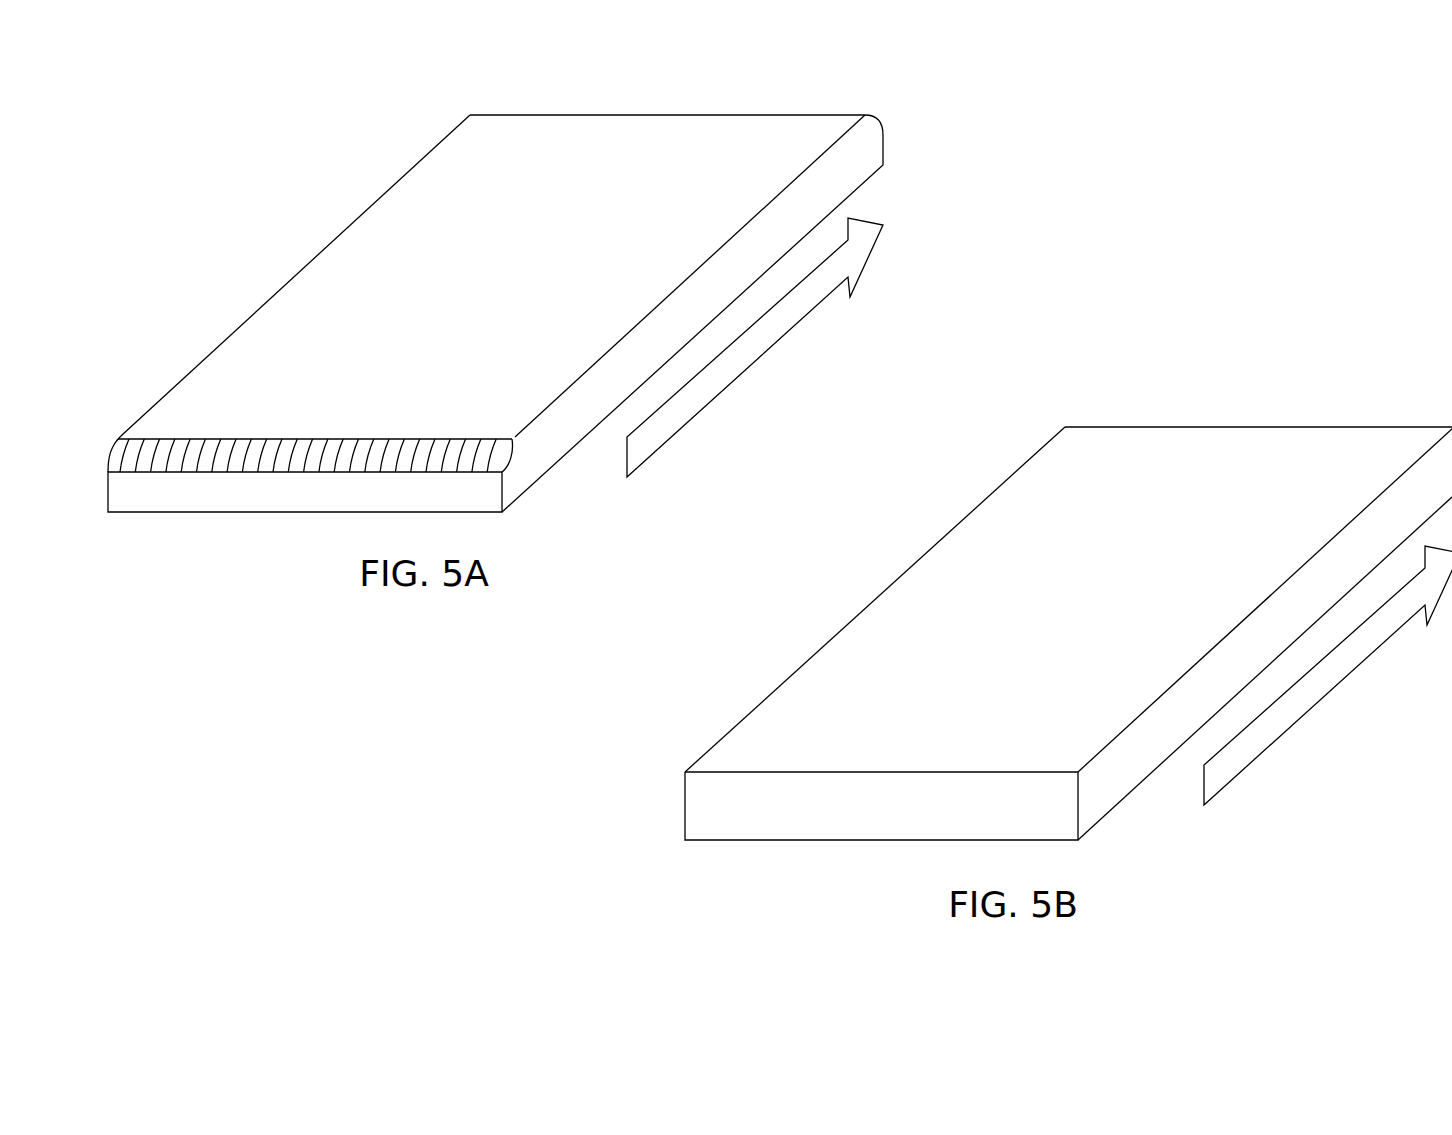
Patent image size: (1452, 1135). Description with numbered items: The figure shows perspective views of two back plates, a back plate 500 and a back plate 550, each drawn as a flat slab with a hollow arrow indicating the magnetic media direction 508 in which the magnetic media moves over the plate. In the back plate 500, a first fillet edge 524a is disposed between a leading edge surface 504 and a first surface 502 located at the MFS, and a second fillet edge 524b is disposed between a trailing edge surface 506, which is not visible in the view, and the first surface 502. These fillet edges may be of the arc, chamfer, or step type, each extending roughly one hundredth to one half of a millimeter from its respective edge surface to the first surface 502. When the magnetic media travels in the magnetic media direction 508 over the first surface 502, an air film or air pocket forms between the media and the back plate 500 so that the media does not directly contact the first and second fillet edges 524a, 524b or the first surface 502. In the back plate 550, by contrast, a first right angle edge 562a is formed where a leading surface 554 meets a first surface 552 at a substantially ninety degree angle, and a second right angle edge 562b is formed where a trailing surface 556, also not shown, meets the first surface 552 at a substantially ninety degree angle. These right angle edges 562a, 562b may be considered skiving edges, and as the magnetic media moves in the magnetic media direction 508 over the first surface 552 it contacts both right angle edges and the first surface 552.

In FIG. 5A, the back plate 500 is at (495, 282).
In FIG. 5A, the first surface 502 is at (488, 272).
In FIG. 5A, the leading edge surface 504 is at (313, 501).
In FIG. 5A, the trailing edge surface 506 is at (676, 100).
In FIG. 5A, the magnetic media direction 508 is at (715, 382).
In FIG. 5B, the magnetic media direction 508 is at (1292, 710).
In FIG. 5A, the first fillet edge 524a is at (243, 445).
In FIG. 5A, the second fillet edge 524b is at (607, 117).
In FIG. 5B, the back plate 550 is at (1068, 608).
In FIG. 5B, the first surface 552 is at (1063, 601).
In FIG. 5B, the leading surface 554 is at (870, 818).
In FIG. 5B, the trailing surface 556 is at (1265, 423).
In FIG. 5B, the first right angle edge 562a is at (834, 772).
In FIG. 5B, the second right angle edge 562b is at (1198, 428).